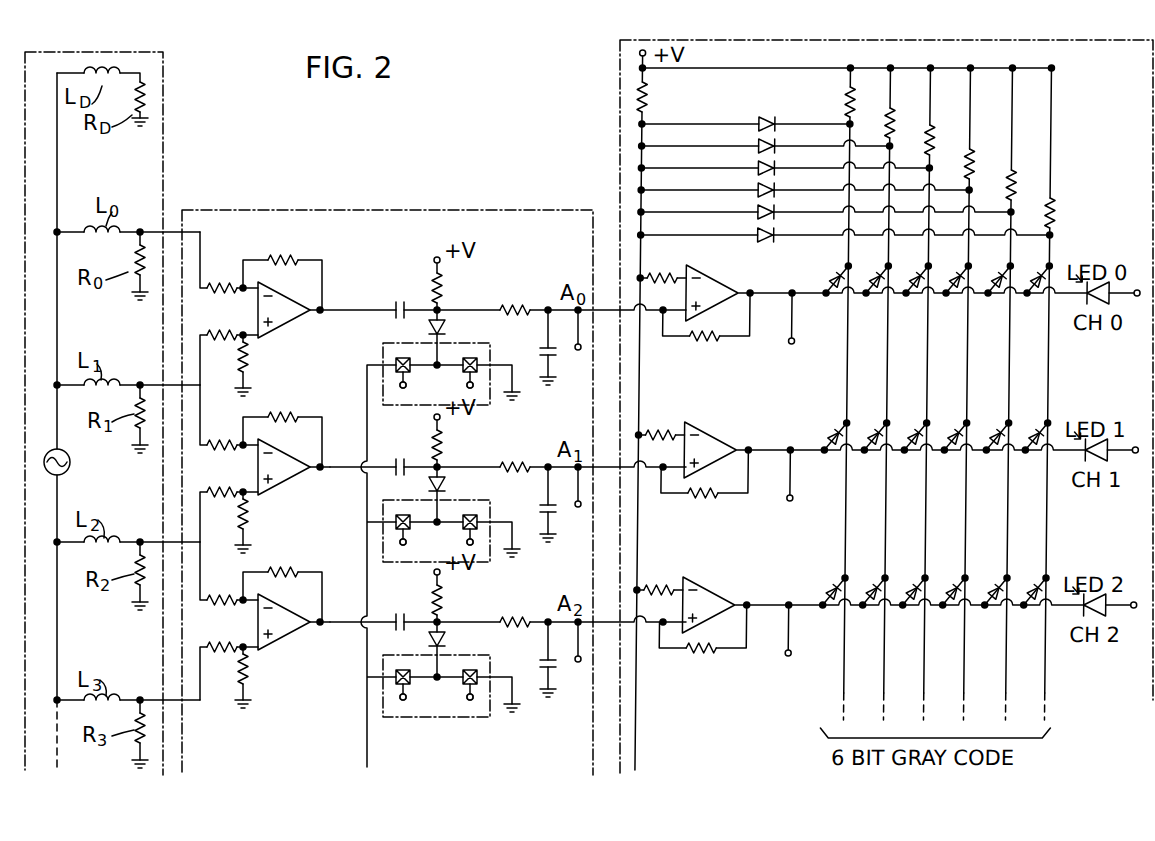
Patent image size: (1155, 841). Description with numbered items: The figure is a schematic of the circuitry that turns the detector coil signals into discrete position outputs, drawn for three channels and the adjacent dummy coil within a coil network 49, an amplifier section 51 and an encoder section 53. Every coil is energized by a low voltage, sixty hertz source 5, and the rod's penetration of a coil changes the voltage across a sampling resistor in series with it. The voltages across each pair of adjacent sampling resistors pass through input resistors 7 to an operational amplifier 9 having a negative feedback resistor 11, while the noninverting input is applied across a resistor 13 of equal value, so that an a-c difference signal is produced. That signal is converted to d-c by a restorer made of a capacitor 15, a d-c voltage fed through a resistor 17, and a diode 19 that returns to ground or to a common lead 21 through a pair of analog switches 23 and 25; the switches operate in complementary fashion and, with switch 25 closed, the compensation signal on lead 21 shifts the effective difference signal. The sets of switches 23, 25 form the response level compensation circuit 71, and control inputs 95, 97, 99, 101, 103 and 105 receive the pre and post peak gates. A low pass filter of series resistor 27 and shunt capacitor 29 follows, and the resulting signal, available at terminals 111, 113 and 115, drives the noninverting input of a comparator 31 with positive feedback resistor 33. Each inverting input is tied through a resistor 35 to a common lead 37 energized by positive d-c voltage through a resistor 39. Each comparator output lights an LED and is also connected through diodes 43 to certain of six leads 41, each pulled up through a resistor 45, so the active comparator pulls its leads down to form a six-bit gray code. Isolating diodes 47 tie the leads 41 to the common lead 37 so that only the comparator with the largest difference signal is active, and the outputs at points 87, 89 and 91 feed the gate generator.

The source 5 is at (71, 460).
The input resistors 7 is at (222, 330).
The operational amplifier 9 is at (281, 332).
The feedback resistor 11 is at (278, 258).
The resistor 13 is at (247, 360).
The capacitor 15 is at (394, 301).
The resistor 17 is at (441, 283).
The diode 19 is at (445, 328).
The common lead 21 is at (365, 388).
The analog switch 23 is at (477, 357).
The analog switch 25 is at (402, 358).
The series resistor 27 is at (506, 305).
The shunt capacitor 29 is at (545, 346).
The comparator 31 is at (742, 274).
The positive feedback resistor 33 is at (700, 338).
The resistor 35 is at (665, 277).
The common lead 37 is at (641, 389).
The resistor 39 is at (648, 96).
The leads 41 is at (851, 315).
The diodes 43 is at (826, 280).
The resistor 45 is at (887, 115).
The isolating diodes 47 is at (754, 146).
The sensor coil network 49 is at (165, 90).
The amplifier circuit 51 is at (400, 208).
The encoder and display circuit 53 is at (618, 88).
The response level compensation circuit 71 is at (383, 344).
The point 87 is at (793, 344).
The point 89 is at (793, 501).
The point 91 is at (793, 656).
The control input 95 is at (470, 388).
The control input 97 is at (403, 388).
The control input 99 is at (470, 545).
The control input 101 is at (403, 545).
The control input 103 is at (470, 700).
The control input 105 is at (403, 700).
The terminal 111 is at (585, 344).
The test point 113 is at (583, 499).
The terminal 115 is at (578, 653).